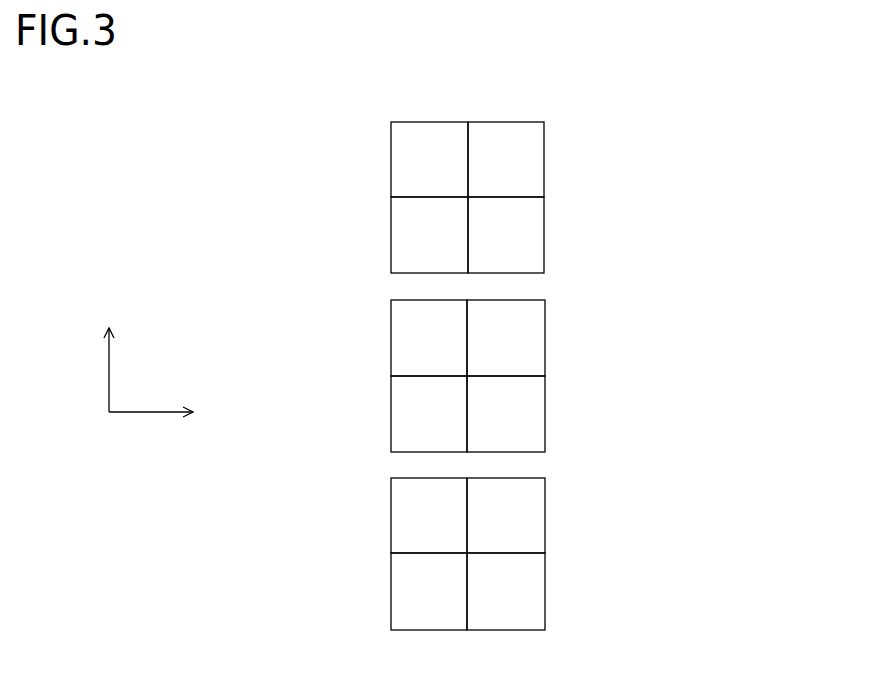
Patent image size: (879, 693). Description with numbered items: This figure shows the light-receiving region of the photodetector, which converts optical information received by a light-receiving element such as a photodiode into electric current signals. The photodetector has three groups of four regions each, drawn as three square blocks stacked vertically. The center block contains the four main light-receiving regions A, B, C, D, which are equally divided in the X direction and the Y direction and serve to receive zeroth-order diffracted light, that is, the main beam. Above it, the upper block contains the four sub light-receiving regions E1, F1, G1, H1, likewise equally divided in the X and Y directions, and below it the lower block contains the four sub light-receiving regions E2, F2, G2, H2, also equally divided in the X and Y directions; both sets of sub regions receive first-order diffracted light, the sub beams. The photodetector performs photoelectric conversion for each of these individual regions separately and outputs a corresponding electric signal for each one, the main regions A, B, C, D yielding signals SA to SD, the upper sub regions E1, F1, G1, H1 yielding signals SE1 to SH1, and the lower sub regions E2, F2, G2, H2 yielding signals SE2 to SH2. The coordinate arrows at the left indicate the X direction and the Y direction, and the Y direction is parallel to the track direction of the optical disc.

The sub light-receiving region E1 is at (429, 159).
The sub light-receiving region F1 is at (506, 159).
The sub light-receiving region G1 is at (429, 235).
The sub light-receiving region H1 is at (506, 235).
The main light-receiving region A is at (429, 338).
The main light-receiving region B is at (506, 338).
The main light-receiving region C is at (506, 414).
The main light-receiving region D is at (429, 414).
The sub light-receiving region E2 is at (429, 515).
The sub light-receiving region F2 is at (506, 515).
The sub light-receiving region G2 is at (429, 591).
The sub light-receiving region H2 is at (506, 591).
The X direction X is at (161, 412).
The Y direction Y is at (109, 357).